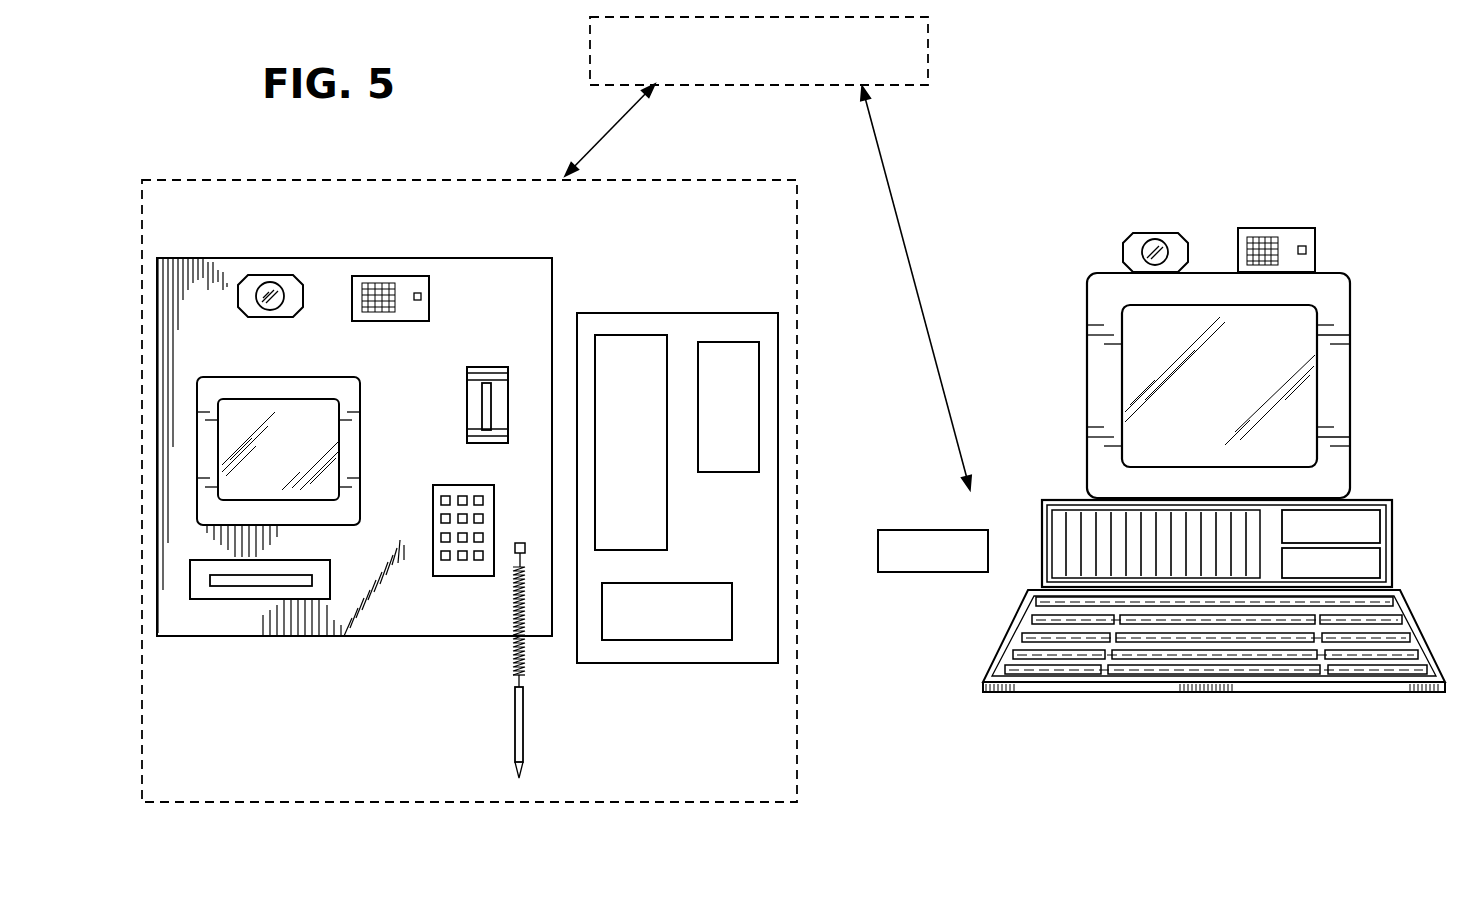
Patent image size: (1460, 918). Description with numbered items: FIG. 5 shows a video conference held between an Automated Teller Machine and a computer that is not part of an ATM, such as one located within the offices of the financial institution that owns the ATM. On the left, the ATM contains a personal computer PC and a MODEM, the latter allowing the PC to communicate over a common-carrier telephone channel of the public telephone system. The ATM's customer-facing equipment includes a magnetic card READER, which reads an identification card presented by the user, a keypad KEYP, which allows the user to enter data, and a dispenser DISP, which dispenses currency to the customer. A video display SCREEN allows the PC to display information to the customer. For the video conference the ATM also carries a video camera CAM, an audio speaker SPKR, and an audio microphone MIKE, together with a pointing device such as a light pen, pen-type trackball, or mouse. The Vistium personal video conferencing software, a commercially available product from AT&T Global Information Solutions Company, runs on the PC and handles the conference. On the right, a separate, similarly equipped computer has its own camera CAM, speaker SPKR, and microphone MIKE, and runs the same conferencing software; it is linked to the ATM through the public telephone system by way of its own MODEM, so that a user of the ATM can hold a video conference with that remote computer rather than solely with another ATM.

The video camera CAM is at (270, 276).
The audio speaker SPKR is at (377, 311).
The audio microphone MIKE is at (421, 297).
The video display SCREEN is at (303, 420).
The magnetic card reader READER is at (483, 438).
The keypad KEYP is at (472, 568).
The dispenser DISP is at (245, 582).
The personal computer PC is at (677, 488).
The modem MODEM is at (667, 611).